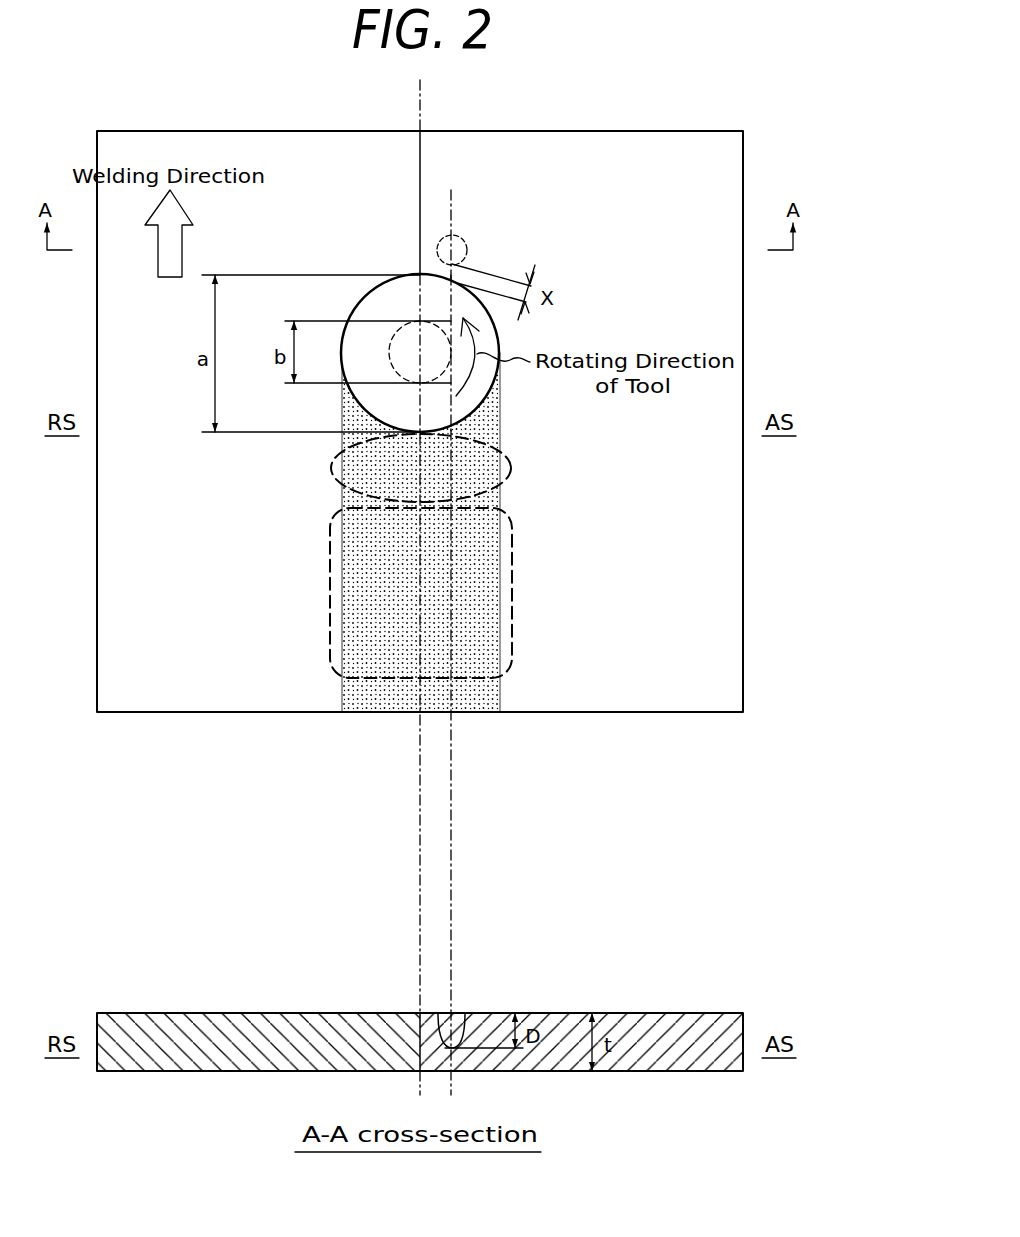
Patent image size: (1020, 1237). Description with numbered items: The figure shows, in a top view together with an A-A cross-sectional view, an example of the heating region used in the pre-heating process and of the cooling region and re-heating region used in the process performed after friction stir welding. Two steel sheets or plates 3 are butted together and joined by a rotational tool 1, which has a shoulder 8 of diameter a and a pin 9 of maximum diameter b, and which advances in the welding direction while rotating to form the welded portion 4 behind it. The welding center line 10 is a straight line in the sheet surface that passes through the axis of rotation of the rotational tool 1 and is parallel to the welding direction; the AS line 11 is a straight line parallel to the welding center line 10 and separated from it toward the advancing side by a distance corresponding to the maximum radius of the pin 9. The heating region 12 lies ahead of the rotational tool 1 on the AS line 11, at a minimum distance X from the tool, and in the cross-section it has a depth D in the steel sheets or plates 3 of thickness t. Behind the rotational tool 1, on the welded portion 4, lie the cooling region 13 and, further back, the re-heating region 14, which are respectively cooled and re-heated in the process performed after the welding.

The rotational tool 1 is at (398, 310).
The steel sheets or plates 3 is at (192, 683).
The welded portion 4 is at (480, 600).
The shoulder of the rotational tool 8 is at (395, 302).
The pin of the rotational tool 9 is at (392, 350).
The welding center line 10 is at (420, 826).
The AS line 11 is at (452, 820).
The heating region 12 is at (464, 242).
The cooling region 13 is at (331, 466).
The re-heating region 14 is at (331, 585).